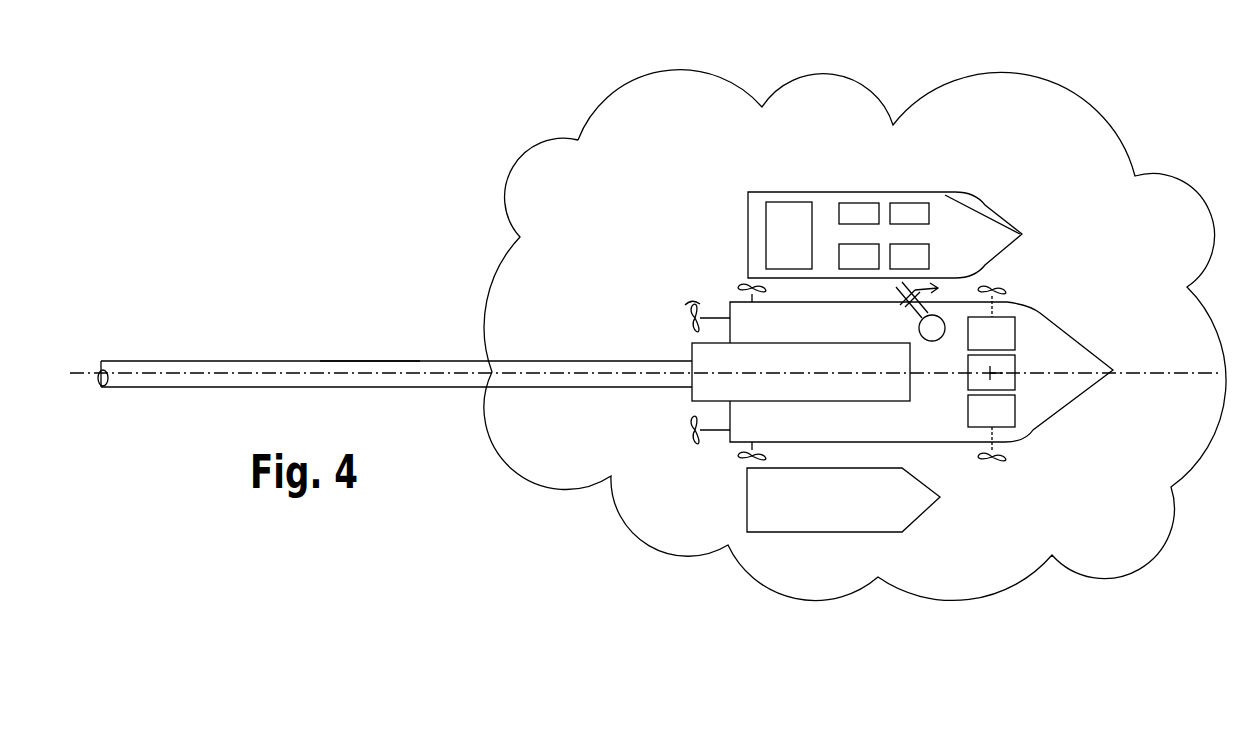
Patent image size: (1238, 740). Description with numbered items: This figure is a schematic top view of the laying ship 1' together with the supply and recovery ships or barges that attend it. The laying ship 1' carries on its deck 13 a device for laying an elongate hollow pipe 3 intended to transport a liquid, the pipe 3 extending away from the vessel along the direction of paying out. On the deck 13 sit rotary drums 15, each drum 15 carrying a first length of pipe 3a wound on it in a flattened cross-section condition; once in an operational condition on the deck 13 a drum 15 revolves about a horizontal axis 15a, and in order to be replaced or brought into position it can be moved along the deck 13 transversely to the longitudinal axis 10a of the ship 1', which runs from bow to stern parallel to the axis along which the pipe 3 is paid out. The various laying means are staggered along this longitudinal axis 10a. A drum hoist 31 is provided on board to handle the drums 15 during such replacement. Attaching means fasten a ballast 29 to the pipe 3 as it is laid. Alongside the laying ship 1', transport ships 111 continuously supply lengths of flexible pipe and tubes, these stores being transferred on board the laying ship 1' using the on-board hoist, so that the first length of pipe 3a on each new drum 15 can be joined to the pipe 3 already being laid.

The laying ship 1' is at (815, 379).
The elongate hollow pipe 3 is at (250, 360).
The first length of pipe 3a is at (333, 373).
The longitudinal axis of the ship 10a is at (813, 373).
The deck 13 is at (740, 313).
The rotary drum 15 is at (905, 253).
The horizontal axis of the drum 15a is at (1020, 376).
The ballast 29 is at (790, 200).
The drum hoist 31 is at (918, 336).
The transport ship 111 is at (972, 207).